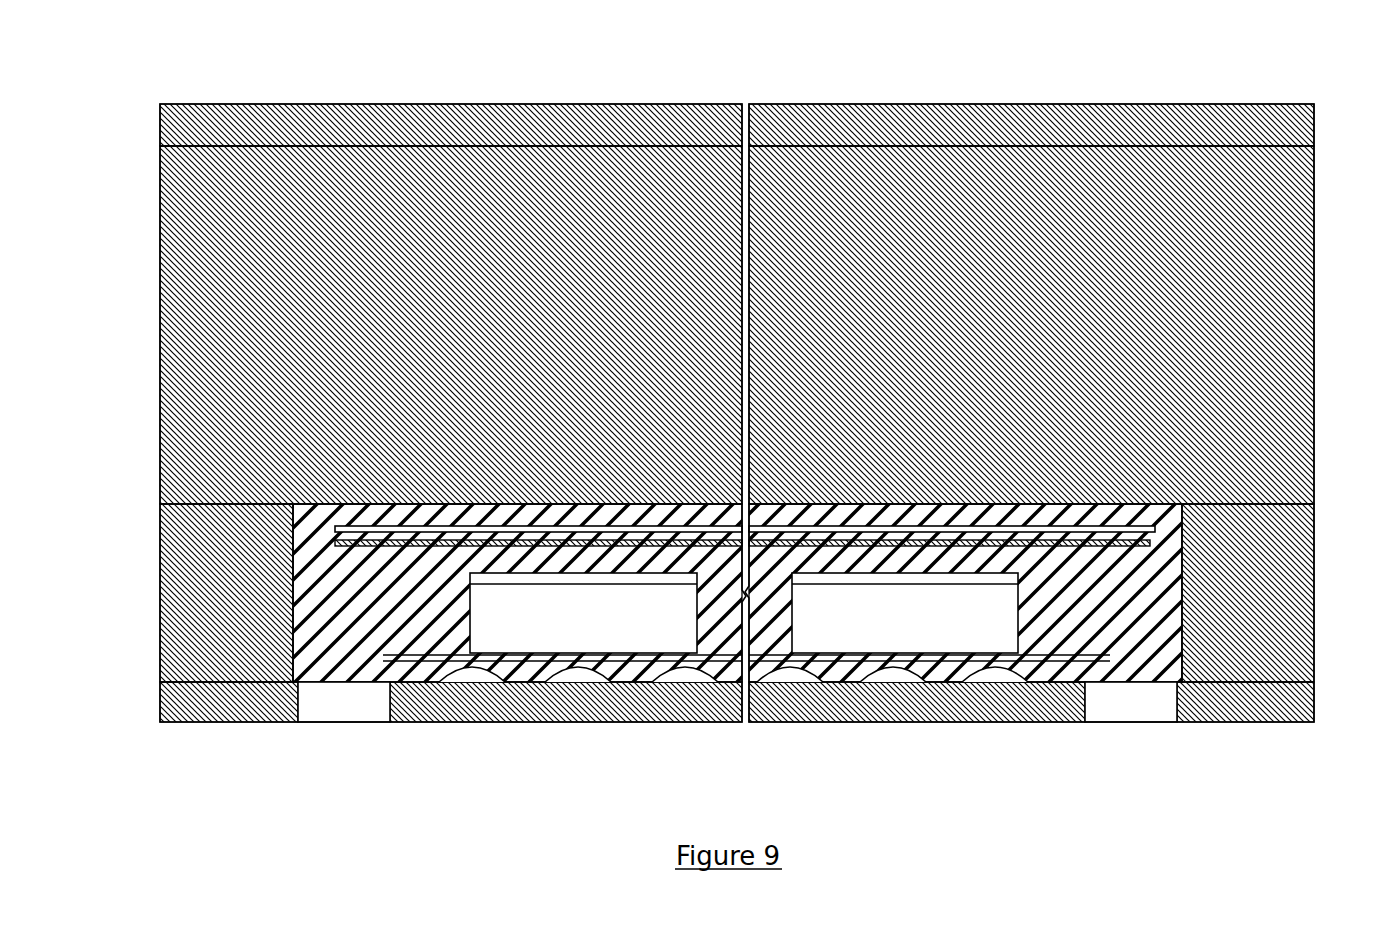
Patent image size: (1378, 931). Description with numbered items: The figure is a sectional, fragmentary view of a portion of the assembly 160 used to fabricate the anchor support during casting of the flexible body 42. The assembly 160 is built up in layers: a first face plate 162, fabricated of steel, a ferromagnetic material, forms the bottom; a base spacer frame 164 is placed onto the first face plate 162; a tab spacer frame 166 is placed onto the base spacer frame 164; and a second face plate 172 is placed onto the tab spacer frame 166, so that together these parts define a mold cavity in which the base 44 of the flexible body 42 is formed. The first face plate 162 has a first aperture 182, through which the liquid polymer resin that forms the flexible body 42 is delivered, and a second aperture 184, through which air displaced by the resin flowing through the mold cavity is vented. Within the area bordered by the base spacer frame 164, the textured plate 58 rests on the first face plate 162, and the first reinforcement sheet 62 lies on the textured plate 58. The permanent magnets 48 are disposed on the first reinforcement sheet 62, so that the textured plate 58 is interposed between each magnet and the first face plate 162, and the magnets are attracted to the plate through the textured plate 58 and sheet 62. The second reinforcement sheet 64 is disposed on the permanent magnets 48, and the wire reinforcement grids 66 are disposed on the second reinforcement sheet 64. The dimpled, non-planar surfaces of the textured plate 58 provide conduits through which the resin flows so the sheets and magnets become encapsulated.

The assembly 160 is at (1113, 73).
The second face plate 172 is at (183, 123).
The tab spacer frame 166 is at (184, 288).
The base spacer frame 164 is at (186, 609).
The first face plate 162 is at (185, 705).
The base 44 is at (307, 535).
The flexible body 42 is at (408, 612).
The permanent magnets 48 is at (1000, 611).
The textured plate 58 is at (978, 673).
The first reinforcement sheet 62 is at (1090, 665).
The second reinforcement sheet 64 is at (1110, 545).
The wire reinforcement grid 66 is at (1133, 525).
The first aperture 182 is at (340, 733).
The second aperture 184 is at (1132, 742).